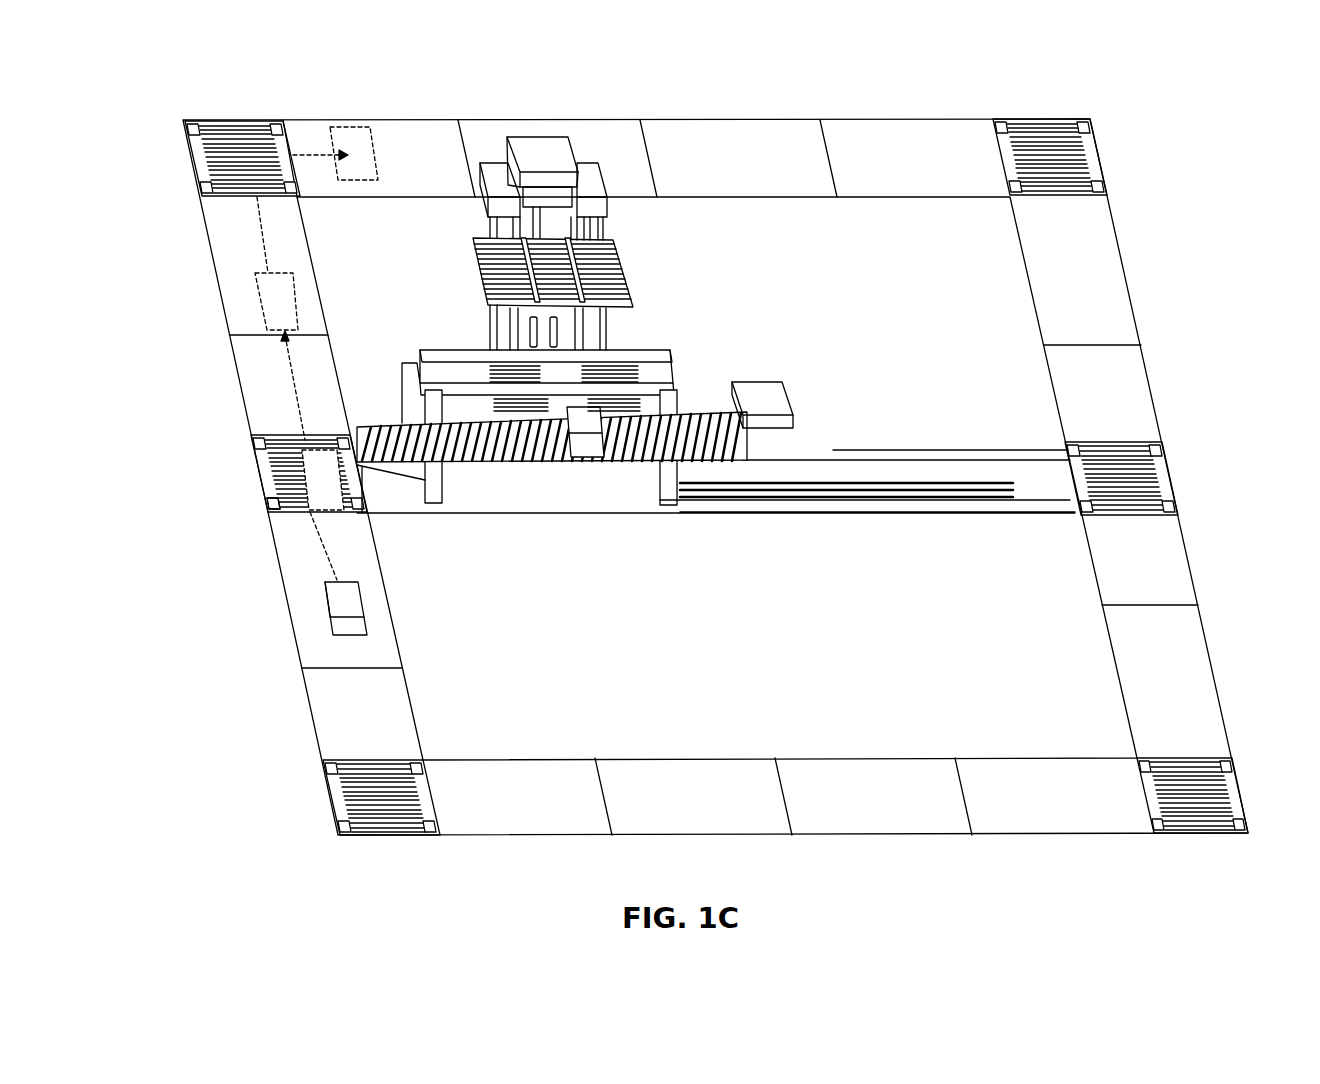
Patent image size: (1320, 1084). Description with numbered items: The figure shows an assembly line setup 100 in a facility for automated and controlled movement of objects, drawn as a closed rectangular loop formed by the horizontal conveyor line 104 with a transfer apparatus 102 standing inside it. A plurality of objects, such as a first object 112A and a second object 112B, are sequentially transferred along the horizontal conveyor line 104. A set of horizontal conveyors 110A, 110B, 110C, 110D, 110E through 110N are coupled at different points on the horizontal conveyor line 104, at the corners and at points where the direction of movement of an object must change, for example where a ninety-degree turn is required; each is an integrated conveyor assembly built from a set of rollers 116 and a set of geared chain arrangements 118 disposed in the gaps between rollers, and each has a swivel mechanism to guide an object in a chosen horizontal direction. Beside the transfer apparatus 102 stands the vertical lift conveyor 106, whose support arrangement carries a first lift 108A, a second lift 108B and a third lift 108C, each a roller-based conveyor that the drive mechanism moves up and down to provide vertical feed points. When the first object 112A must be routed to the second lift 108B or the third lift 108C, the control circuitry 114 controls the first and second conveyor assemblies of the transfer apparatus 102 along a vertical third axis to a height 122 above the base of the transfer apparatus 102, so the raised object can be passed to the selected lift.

The assembly line setup 100 is at (1168, 188).
The transfer apparatus 102 is at (689, 383).
The horizontal conveyor line 104 is at (1120, 332).
The vertical lift conveyor 106 is at (590, 332).
The first lift 108A is at (478, 362).
The second lift 108B is at (490, 328).
The third lift 108C is at (476, 238).
The horizontal conveyor 110A is at (272, 450).
The horizontal conveyor 110B is at (192, 124).
The horizontal conveyor 110C is at (1150, 142).
The horizontal conveyor 110D is at (1150, 452).
The horizontal conveyor 110E is at (1222, 770).
The horizontal conveyor 110N is at (340, 765).
The first object 112A is at (340, 597).
The second object 112B is at (280, 300).
The control circuitry 114 is at (772, 405).
The set of rollers 116 is at (268, 438).
The set of geared chain arrangements 118 is at (265, 486).
The height 122 is at (626, 478).